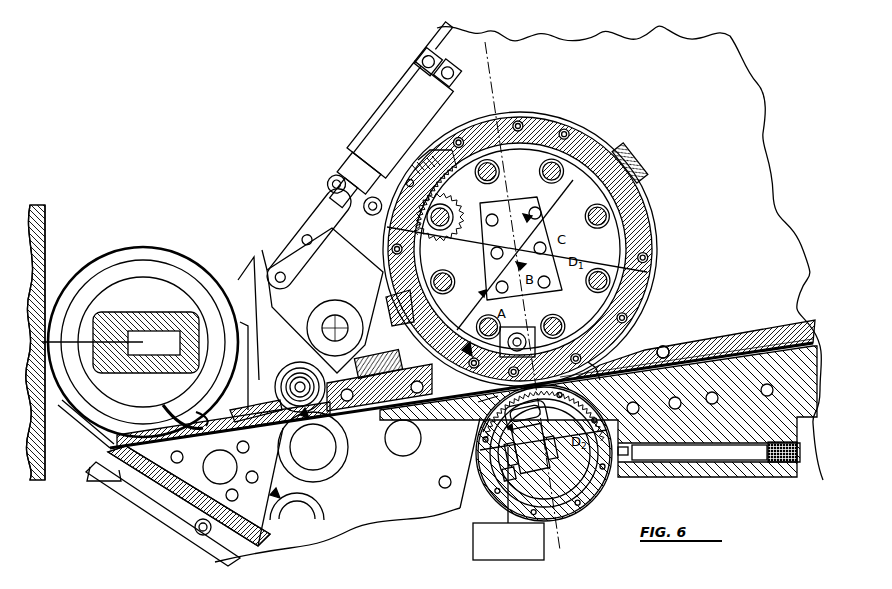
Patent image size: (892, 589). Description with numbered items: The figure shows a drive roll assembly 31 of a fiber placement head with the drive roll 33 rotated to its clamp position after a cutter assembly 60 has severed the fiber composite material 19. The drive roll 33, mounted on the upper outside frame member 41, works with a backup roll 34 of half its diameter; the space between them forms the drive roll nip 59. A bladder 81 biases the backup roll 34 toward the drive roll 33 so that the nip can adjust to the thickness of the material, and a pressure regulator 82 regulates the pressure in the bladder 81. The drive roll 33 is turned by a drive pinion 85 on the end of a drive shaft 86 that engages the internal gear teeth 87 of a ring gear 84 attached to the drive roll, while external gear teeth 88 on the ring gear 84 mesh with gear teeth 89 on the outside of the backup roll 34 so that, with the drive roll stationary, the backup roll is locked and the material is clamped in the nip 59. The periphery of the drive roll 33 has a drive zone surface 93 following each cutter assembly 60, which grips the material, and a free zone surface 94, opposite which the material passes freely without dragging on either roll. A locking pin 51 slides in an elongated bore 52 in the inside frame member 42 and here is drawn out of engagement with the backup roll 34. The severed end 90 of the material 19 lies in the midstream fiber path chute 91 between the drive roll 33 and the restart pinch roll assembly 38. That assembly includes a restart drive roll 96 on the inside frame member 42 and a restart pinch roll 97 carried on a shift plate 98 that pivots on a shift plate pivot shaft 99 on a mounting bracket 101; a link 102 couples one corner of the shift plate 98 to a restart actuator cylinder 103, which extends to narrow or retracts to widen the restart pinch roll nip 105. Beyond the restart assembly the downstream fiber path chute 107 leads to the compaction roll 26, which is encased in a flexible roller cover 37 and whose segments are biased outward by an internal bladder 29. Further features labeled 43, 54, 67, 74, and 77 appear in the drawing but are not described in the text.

The compaction roll 26 is at (137, 245).
The flexible roller cover 37 is at (171, 248).
The bladder 29 is at (150, 312).
The downstream fiber path chute 107 is at (178, 410).
The guide 43 is at (201, 422).
The restart pinch roll assembly 38 is at (264, 398).
The restart pinch roll 97 is at (298, 372).
The shift plate pivot shaft 99 is at (342, 322).
The shift plate 98 is at (325, 306).
The restart actuator cylinder 103 is at (380, 152).
The ring gear 84 is at (428, 160).
The link 102 is at (290, 250).
The drive roll assembly 31 is at (651, 150).
The drive zone surface 93 is at (545, 120).
The free zone surface 94 is at (393, 258).
The drive roll 33 is at (659, 250).
The bolt 67 is at (562, 163).
The drive pinion 85 is at (493, 178).
The drive shaft 86 is at (487, 172).
The internal gear teeth 87 is at (432, 176).
The external gear teeth 88 is at (410, 172).
The mounting bracket 101 is at (392, 277).
The cutter assembly 60 is at (641, 170).
The bearing block 74 is at (531, 341).
The gear teeth 89 is at (590, 361).
The fiber composite material 19 is at (708, 346).
The upper outside frame member 41 is at (748, 326).
The hole 54 is at (663, 346).
The inside frame member 42 is at (810, 381).
The restart pinch roll nip 105 is at (285, 434).
The locking pin 51 is at (750, 461).
The elongated bore 52 is at (638, 458).
The severed end 90 is at (425, 396).
The midstream fiber path chute 91 is at (348, 440).
The restart drive roll 96 is at (293, 503).
The backup roll 34 is at (570, 512).
The lever 77 is at (480, 478).
The bladder 81 is at (505, 481).
The drive roll nip 59 is at (490, 405).
The pressure regulator 82 is at (473, 543).